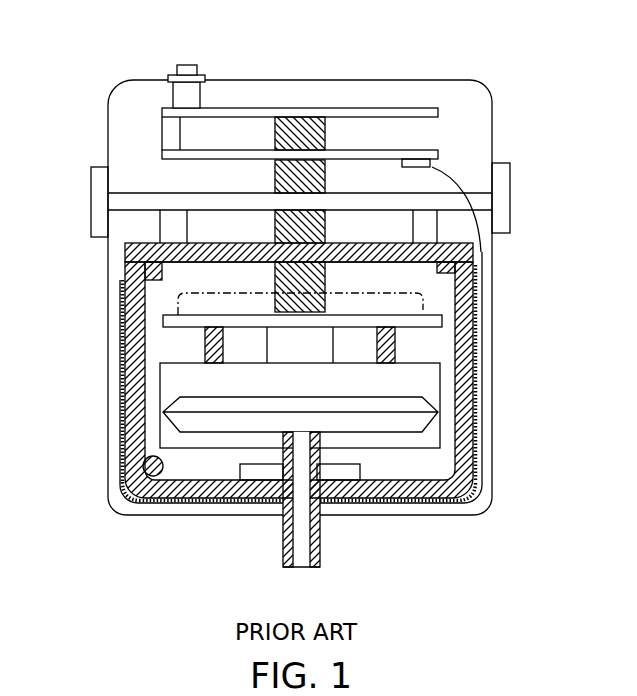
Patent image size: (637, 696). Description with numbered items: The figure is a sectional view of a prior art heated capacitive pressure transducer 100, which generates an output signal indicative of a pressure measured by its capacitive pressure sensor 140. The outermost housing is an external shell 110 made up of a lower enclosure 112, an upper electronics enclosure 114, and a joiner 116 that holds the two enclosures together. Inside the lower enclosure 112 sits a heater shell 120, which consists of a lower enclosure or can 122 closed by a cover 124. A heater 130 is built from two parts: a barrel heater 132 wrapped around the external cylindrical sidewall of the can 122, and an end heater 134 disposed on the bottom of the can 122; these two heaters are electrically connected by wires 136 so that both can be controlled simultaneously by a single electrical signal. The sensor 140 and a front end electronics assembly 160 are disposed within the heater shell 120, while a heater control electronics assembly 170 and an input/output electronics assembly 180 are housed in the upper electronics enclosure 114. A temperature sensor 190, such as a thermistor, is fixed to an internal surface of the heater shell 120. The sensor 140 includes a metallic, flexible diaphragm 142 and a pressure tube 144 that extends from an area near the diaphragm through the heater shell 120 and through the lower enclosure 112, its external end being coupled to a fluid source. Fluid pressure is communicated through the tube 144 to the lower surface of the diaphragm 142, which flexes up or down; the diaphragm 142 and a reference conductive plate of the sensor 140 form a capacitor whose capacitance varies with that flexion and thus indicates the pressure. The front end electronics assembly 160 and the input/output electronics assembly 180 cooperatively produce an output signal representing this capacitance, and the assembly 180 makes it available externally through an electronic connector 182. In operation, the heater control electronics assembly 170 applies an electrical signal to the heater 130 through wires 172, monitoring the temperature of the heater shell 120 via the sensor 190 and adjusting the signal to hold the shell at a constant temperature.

The heated capacitive pressure transducer 100 is at (86, 382).
The external shell 110 is at (197, 515).
The lower enclosure 112 is at (258, 515).
The upper electronics enclosure 114 is at (286, 80).
The joiner 116 is at (91, 191).
The heater shell 120 is at (133, 500).
The can 122 is at (121, 485).
The cover 124 is at (125, 250).
The heater 130 is at (482, 427).
The barrel heater 132 is at (478, 447).
The end heater 134 is at (422, 502).
The wires 136 is at (487, 503).
The capacitive pressure sensor 140 is at (440, 383).
The diaphragm 142 is at (237, 412).
The pressure tube 144 is at (320, 549).
The front end electronics assembly 160 is at (480, 302).
The heater control electronics assembly 170 is at (412, 150).
The wires 172 is at (484, 245).
The input/output electronics assembly 180 is at (398, 108).
The electronic connector 182 is at (188, 64).
The temperature sensor 190 is at (163, 466).